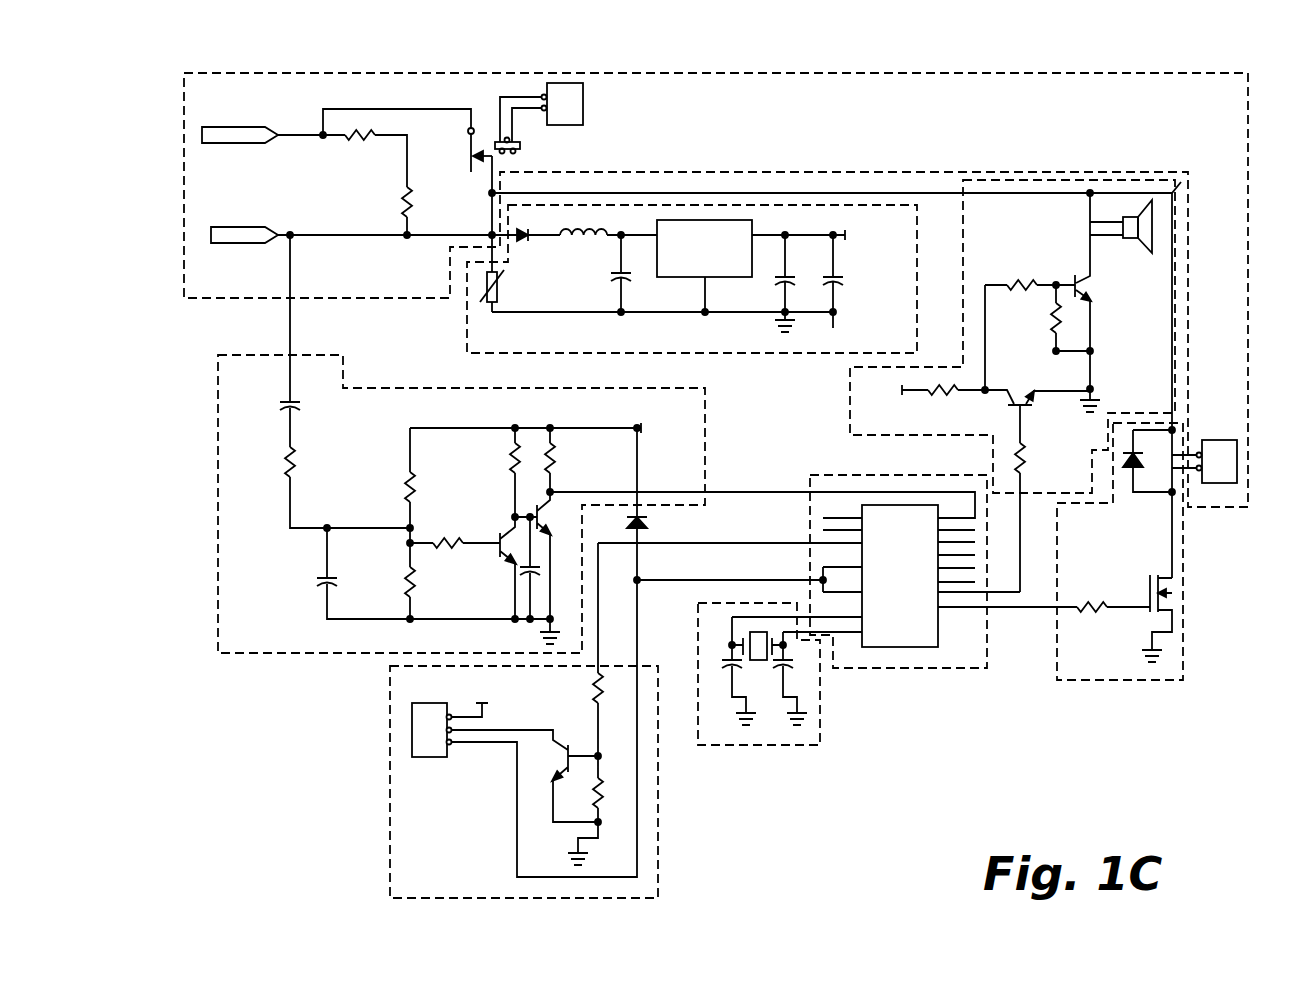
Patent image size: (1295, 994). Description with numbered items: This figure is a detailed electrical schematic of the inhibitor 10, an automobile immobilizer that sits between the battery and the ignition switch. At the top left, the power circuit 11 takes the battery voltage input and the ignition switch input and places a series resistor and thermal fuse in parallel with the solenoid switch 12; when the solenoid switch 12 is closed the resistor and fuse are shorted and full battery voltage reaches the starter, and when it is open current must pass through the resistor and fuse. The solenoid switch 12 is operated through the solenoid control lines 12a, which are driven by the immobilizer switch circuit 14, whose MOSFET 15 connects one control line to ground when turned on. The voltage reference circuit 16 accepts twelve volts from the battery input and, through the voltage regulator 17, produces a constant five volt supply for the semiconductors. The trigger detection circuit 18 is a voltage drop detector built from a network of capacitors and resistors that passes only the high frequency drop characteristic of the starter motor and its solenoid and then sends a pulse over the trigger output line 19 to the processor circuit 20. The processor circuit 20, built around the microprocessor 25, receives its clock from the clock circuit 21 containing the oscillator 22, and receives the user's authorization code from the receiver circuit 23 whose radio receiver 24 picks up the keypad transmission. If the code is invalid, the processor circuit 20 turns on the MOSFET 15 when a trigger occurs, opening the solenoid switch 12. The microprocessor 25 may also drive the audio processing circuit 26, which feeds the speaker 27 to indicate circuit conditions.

The inhibitor 10 is at (1259, 79).
The power circuit 11 is at (229, 73).
The solenoid switch 12 is at (583, 105).
The solenoid control lines 12a is at (1203, 440).
The immobilizer switch circuit 14 is at (1078, 551).
The MOSFET 15 is at (1146, 573).
The voltage reference circuit 16 is at (671, 279).
The voltage regulator 17 is at (716, 260).
The trigger detection circuit 18 is at (272, 654).
The trigger output line 19 is at (645, 490).
The processor circuit 20 is at (785, 588).
The clock circuit 21 is at (759, 691).
The oscillator 22 is at (751, 632).
The receiver circuit 23 is at (504, 720).
The radio receiver 24 is at (425, 757).
The microprocessor 25 is at (911, 613).
The audio processing circuit 26 is at (994, 386).
The speaker 27 is at (1128, 247).